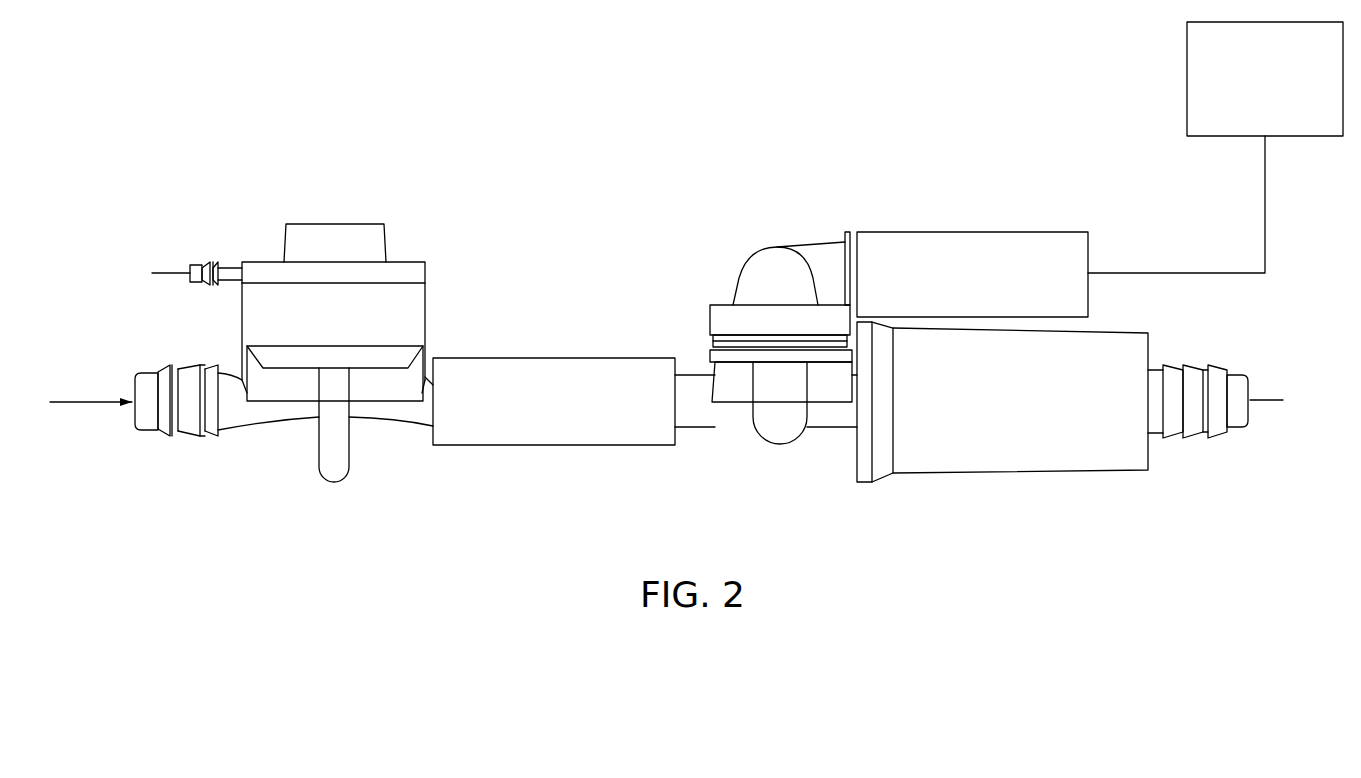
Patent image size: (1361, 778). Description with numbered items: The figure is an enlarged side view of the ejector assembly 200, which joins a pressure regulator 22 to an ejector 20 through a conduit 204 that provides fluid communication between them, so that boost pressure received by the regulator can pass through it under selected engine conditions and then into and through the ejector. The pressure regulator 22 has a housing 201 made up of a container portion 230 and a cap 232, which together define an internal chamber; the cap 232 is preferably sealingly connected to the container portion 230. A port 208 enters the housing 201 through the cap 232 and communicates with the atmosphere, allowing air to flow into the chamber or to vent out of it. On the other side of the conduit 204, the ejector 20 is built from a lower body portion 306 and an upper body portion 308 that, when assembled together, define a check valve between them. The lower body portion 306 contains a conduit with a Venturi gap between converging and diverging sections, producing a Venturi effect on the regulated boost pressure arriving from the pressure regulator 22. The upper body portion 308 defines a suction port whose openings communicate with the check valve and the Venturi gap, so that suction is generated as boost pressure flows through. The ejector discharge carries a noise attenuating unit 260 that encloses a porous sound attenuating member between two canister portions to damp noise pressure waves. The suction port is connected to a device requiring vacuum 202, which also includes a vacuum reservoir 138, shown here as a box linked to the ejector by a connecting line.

The ejector assembly 200 is at (620, 146).
The pressure regulator 22 is at (257, 212).
The housing 201 is at (428, 302).
The container portion 230 is at (242, 314).
The cap 232 is at (413, 262).
The port 208 is at (203, 262).
The conduit 204 is at (518, 436).
The lower body portion 306 is at (713, 420).
The ejector 20 is at (720, 272).
The upper body portion 308 is at (767, 256).
The noise attenuating unit 260 is at (1022, 462).
The vacuum reservoir 138 is at (1215, 147).
The device requiring vacuum 202 is at (1315, 91).